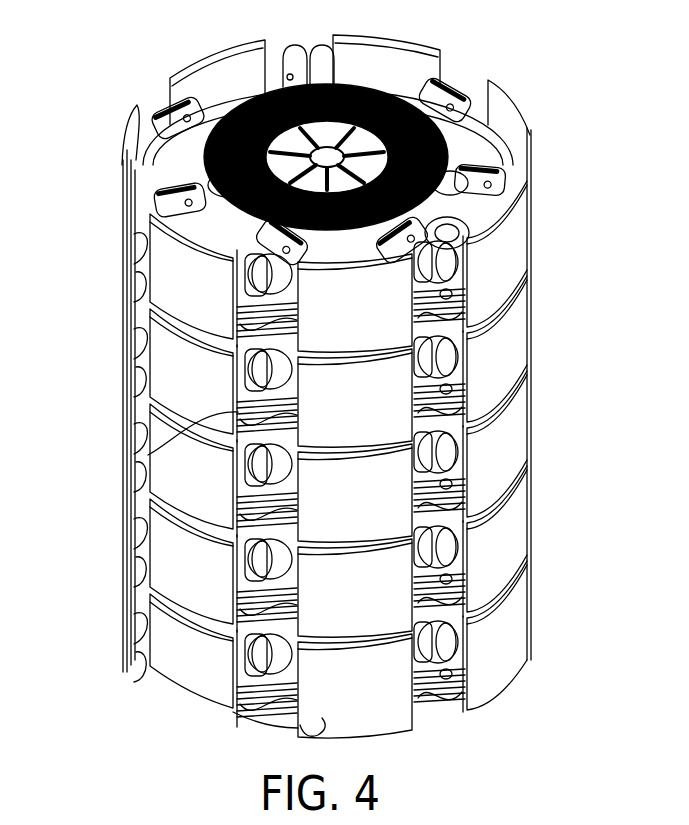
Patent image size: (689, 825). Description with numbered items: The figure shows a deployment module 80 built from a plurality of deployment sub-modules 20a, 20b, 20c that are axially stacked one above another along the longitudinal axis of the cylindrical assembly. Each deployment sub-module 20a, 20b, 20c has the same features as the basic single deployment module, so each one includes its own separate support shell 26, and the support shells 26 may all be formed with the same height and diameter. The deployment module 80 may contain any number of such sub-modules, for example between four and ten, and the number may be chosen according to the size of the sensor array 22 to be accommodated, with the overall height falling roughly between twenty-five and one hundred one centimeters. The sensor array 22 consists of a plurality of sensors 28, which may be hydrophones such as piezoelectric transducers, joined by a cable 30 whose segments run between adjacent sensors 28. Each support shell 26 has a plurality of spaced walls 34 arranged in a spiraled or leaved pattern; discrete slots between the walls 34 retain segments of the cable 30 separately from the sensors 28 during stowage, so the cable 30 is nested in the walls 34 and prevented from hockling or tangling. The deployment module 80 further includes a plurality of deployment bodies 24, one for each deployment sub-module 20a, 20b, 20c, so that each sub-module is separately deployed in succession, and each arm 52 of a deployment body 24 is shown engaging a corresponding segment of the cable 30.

The deployment module 80 is at (118, 62).
The sensor array 22 is at (136, 173).
The deployment body 24 is at (505, 90).
The support shell 26 is at (502, 225).
The sensors 28 is at (484, 143).
The cable 30 is at (470, 333).
The arm 52 is at (470, 378).
The deployment sub-module 20a is at (168, 262).
The deployment sub-module 20b is at (168, 360).
The deployment sub-module 20c is at (168, 660).
The walls 34 is at (148, 455).